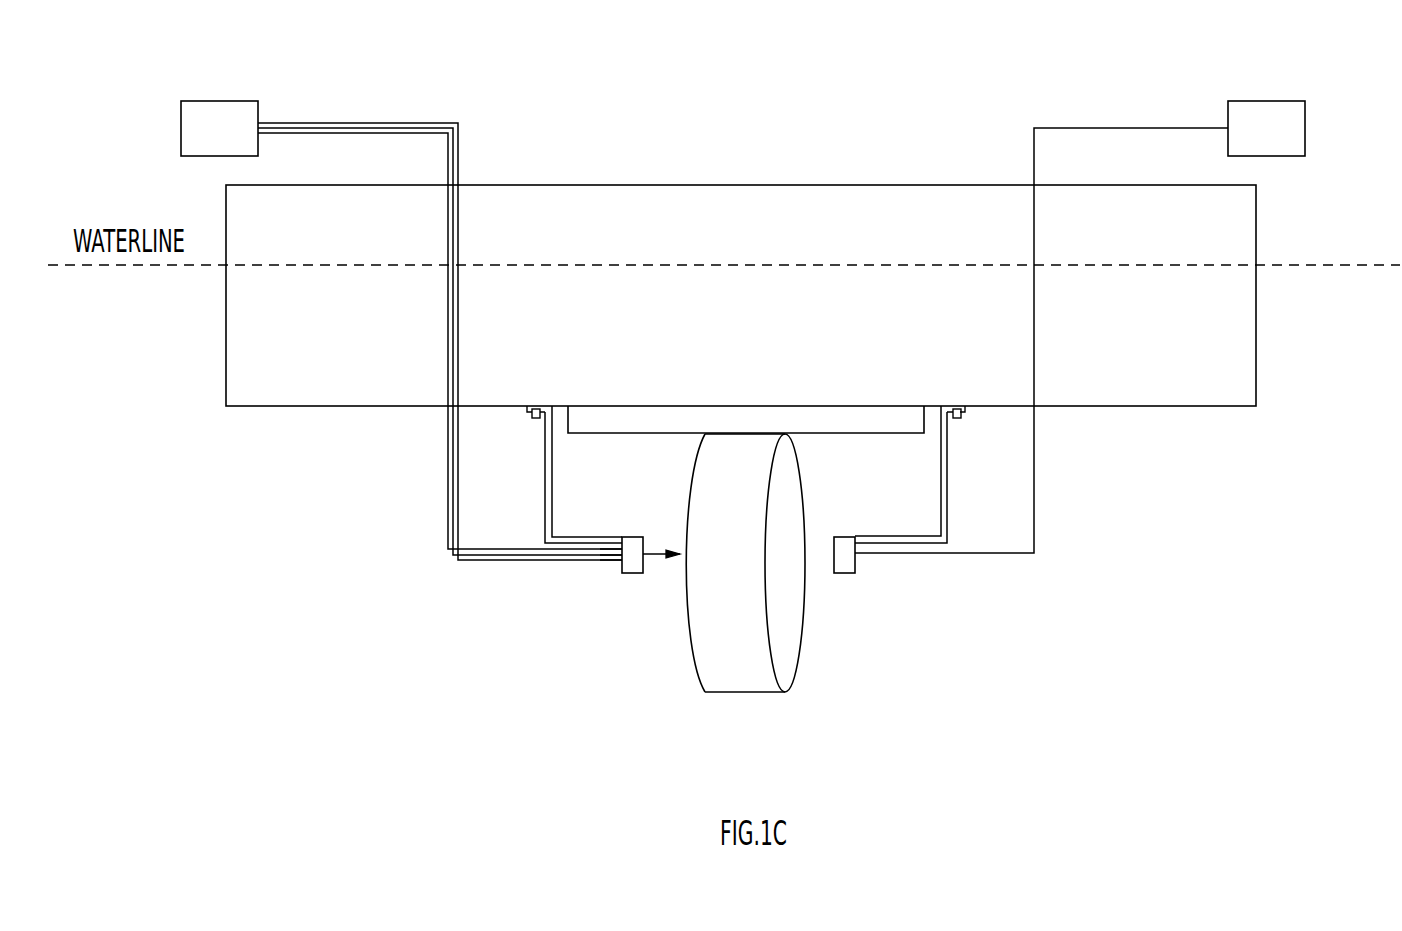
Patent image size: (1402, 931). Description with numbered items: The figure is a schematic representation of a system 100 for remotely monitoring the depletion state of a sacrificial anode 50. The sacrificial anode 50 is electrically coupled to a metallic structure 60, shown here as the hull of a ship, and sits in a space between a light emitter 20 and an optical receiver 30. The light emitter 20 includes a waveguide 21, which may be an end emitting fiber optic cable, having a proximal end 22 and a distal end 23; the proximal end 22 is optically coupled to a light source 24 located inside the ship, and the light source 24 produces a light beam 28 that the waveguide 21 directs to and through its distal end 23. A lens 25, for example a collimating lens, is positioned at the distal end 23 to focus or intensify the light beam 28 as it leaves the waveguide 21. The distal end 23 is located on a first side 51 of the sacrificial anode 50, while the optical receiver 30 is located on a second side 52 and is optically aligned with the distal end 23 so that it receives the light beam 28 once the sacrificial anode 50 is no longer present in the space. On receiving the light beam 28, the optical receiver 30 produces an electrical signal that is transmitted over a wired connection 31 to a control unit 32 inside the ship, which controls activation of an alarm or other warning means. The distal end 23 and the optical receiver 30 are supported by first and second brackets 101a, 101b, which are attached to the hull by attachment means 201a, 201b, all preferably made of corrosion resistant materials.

The system 100 is at (987, 46).
The metallic structure 60 is at (755, 348).
The light source 24 is at (198, 101).
The proximal end 22 is at (262, 125).
The waveguide 21 is at (459, 493).
The distal end 23 is at (620, 556).
The lens 25 is at (632, 537).
The light beam 28 is at (657, 556).
The first bracket 101a is at (553, 494).
The second bracket 101b is at (940, 495).
The attachment means 201a is at (535, 422).
The attachment means 201b is at (957, 418).
The optical receiver 30 is at (843, 537).
The wired connection 31 is at (1035, 523).
The control unit 32 is at (1268, 101).
The sacrificial anode 50 is at (743, 584).
The first side 51 is at (697, 673).
The second side 52 is at (793, 632).
The light emitter 20 is at (368, 554).